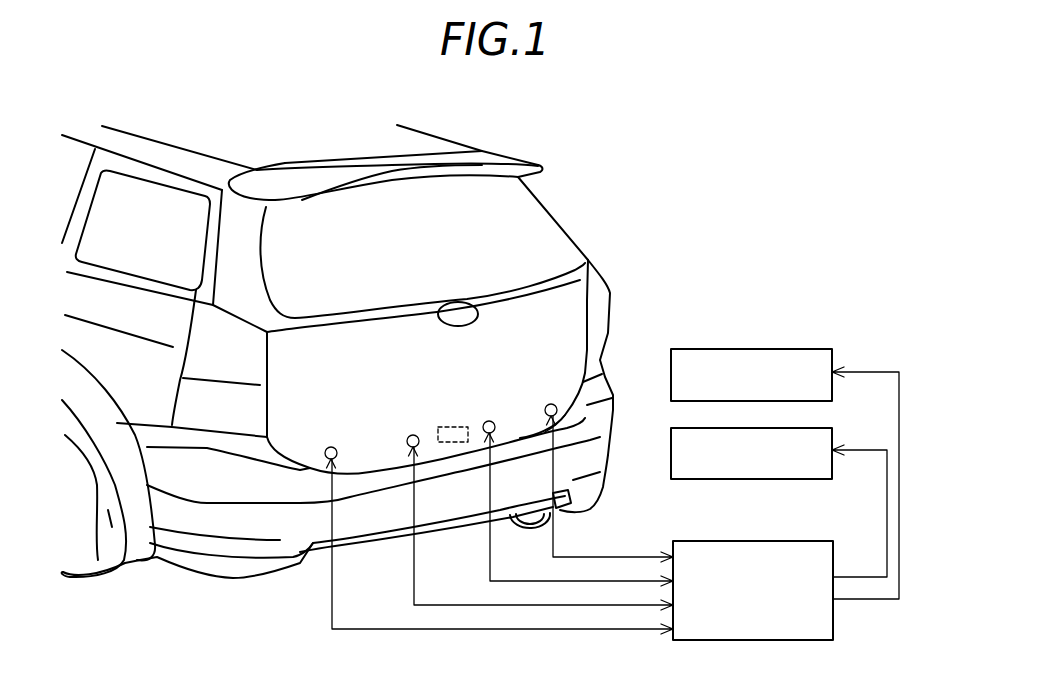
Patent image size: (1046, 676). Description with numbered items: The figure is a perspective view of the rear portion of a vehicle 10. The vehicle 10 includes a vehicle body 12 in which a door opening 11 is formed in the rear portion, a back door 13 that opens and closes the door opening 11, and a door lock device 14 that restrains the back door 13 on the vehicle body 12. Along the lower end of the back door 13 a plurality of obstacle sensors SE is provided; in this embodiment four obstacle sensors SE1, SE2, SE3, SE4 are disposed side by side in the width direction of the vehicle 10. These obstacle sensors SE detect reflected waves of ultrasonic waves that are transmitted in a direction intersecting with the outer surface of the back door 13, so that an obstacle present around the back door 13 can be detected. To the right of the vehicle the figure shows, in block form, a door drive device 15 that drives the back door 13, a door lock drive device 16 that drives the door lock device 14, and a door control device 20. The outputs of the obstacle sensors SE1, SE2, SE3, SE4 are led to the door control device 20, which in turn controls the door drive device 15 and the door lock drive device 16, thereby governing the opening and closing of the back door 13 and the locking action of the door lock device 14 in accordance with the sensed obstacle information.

The vehicle 10 is at (565, 129).
The door opening 11 is at (266, 361).
The vehicle body 12 is at (193, 167).
The back door 13 is at (574, 294).
The door lock device 14 is at (458, 427).
The obstacle sensor SE1 is at (331, 447).
The obstacle sensor SE2 is at (413, 435).
The obstacle sensor SE3 is at (489, 421).
The obstacle sensor SE4 is at (551, 404).
The obstacle sensors SE is at (580, 418).
The door drive device 15 is at (745, 348).
The door lock drive device 16 is at (745, 428).
The door control device 20 is at (693, 642).